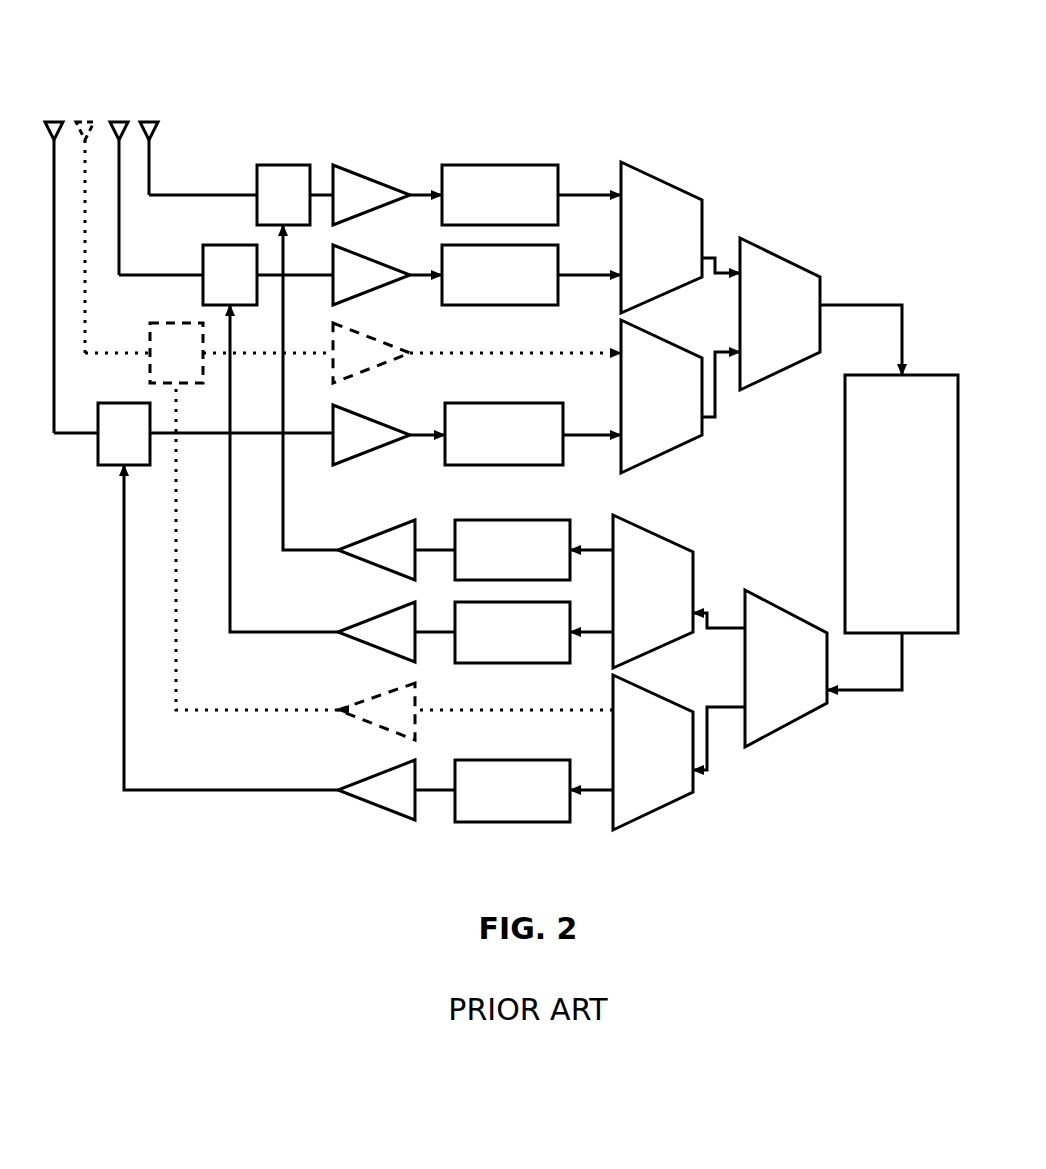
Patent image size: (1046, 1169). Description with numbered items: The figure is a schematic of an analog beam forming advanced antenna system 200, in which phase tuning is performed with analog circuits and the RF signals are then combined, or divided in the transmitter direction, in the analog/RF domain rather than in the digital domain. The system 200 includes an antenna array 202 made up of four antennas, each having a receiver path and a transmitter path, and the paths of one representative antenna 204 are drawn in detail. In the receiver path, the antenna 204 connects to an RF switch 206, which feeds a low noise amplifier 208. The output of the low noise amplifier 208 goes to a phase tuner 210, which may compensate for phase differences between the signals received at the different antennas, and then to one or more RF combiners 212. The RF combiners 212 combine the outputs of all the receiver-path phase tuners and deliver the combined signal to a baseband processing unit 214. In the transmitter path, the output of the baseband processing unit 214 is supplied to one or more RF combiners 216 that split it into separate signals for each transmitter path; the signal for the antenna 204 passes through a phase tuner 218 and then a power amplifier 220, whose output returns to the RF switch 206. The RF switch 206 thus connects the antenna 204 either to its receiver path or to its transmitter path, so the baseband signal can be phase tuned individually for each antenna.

The analog beam forming advanced antenna system 200 is at (512, 894).
The antenna array 202 is at (118, 72).
The antenna 204 is at (160, 127).
The RF switch 206 is at (100, 418).
The low noise amplifier 208 is at (368, 175).
The phase tuner 210 is at (497, 165).
The RF combiner 212 is at (660, 178).
The baseband processing unit 214 is at (845, 495).
The RF combiner 216 is at (665, 540).
The phase tuner 218 is at (455, 520).
The power amplifier 220 is at (365, 535).